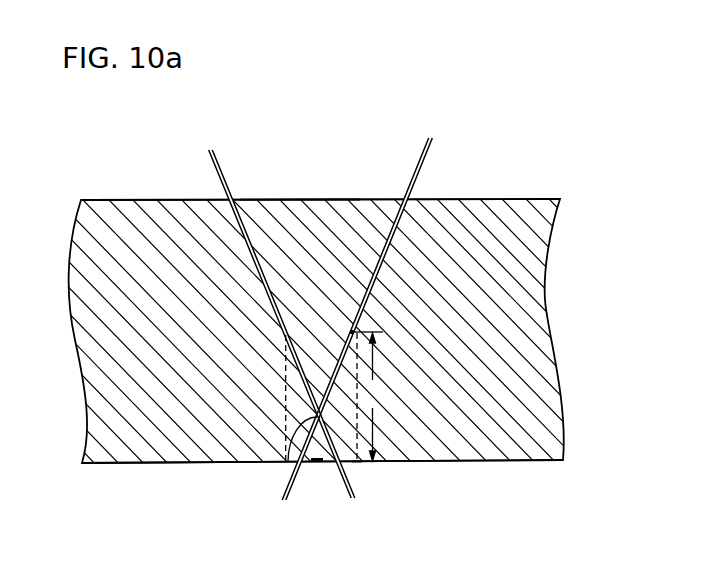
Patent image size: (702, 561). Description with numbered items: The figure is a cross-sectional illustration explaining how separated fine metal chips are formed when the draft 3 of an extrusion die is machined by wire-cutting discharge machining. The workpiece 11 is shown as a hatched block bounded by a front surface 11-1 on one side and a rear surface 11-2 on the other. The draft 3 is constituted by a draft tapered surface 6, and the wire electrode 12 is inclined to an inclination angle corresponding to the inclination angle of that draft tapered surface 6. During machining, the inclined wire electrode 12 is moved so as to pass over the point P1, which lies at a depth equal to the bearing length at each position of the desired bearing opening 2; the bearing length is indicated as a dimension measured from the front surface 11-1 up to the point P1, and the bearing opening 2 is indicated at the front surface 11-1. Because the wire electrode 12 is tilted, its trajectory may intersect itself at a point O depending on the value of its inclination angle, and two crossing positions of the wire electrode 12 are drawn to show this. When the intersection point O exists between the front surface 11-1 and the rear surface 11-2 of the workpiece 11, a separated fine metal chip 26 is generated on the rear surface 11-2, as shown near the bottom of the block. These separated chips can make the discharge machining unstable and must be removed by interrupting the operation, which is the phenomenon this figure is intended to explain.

The workpiece 11 is at (550, 325).
The rear surface of the workpiece 11-2 is at (137, 200).
The front surface of the workpiece 11-1 is at (153, 463).
The draft 3 is at (300, 192).
The wire electrode 12 is at (416, 168).
The draft tapered surface 6 is at (407, 225).
The point P1 is at (352, 324).
The intersection point O is at (287, 463).
The separated fine metal chip 26 is at (323, 468).
The bearing opening 2 is at (358, 463).